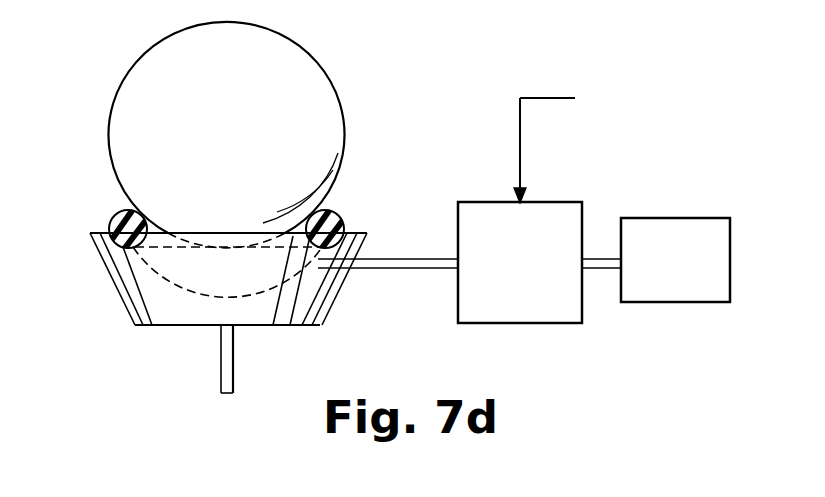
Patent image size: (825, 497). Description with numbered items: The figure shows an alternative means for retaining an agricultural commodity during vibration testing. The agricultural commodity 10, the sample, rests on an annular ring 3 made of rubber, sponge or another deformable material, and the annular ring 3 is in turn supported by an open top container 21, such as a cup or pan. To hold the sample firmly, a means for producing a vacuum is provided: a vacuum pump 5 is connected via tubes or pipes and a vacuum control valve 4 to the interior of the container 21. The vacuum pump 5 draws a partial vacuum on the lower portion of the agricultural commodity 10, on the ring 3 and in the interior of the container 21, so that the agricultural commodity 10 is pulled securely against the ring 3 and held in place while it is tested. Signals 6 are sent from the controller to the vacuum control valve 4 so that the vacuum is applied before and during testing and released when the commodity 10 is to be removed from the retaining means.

The agricultural commodity 10 is at (343, 105).
The container 21 is at (335, 298).
The annular ring 3 is at (115, 214).
The vacuum control valve 4 is at (535, 323).
The vacuum pump 5 is at (668, 302).
The signals 6 is at (519, 147).